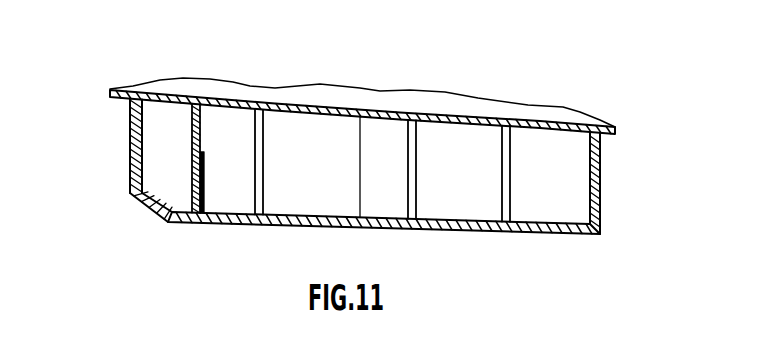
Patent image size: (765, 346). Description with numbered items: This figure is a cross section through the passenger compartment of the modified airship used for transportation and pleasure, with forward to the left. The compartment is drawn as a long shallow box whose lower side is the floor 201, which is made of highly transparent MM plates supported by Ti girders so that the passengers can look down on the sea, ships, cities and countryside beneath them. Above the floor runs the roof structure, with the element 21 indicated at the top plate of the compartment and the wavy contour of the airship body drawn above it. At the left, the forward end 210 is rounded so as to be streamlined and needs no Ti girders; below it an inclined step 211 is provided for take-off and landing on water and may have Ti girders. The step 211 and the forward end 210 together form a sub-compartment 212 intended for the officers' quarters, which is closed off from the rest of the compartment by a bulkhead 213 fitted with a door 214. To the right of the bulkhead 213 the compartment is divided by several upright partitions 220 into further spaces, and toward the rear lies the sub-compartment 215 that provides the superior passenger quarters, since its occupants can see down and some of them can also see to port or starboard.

The top plate 21 is at (283, 107).
The floor 201 is at (297, 216).
The forward end 210 is at (131, 176).
The step 211 is at (141, 208).
The sub-compartment 212 is at (150, 125).
The bulkhead 213 is at (200, 136).
The door 214 is at (204, 199).
The sub-compartment 215 is at (522, 136).
The partition 220 is at (263, 168).